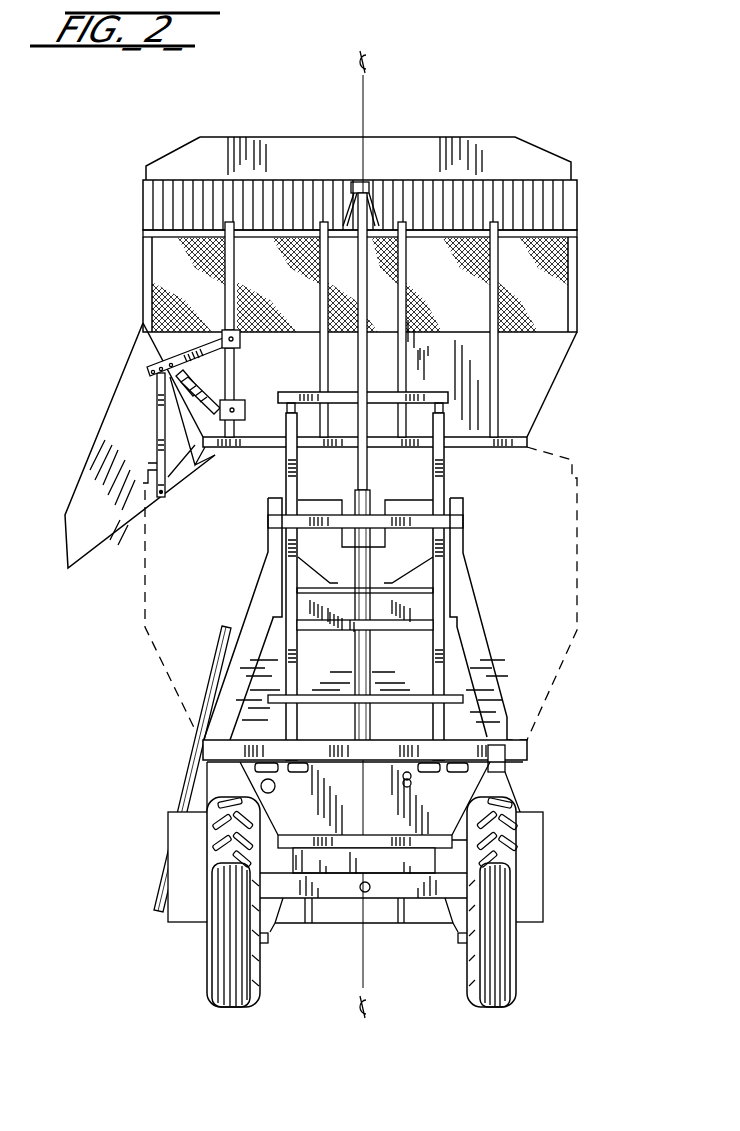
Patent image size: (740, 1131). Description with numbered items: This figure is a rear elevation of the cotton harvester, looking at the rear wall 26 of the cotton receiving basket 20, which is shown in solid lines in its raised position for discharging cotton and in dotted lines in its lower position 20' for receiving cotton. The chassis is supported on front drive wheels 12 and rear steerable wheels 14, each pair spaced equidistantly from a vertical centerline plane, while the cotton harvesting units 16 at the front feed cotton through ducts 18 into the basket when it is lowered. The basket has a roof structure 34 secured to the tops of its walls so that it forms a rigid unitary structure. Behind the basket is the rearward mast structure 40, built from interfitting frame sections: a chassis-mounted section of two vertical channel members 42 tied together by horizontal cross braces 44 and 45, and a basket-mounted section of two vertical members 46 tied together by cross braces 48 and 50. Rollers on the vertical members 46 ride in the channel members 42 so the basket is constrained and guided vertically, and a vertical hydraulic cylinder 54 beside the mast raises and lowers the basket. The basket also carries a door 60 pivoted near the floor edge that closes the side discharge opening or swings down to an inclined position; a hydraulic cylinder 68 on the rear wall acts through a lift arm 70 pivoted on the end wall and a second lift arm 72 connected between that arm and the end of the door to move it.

The front drive wheels 12 is at (216, 855).
The rear steerable wheels 14 is at (222, 962).
The cotton harvesting units 16 is at (183, 908).
The ducts 18 is at (275, 505).
The cotton receiving basket 20 is at (398, 422).
The cotton receiving basket (lowered position) 20' is at (399, 593).
The rear wall 26 is at (530, 370).
The roof structure 34 is at (249, 137).
The rearward mast structure 40 is at (278, 597).
The vertical channel members 42 is at (432, 686).
The horizontal cross brace 44 is at (396, 518).
The horizontal cross brace 45 is at (418, 608).
The vertical members 46 is at (287, 483).
The cross brace 48 is at (390, 623).
The cross brace 50 is at (418, 392).
The vertical hydraulic cylinder 54 is at (372, 548).
The door 60 is at (100, 562).
The hydraulic cylinder 68 is at (213, 396).
The lift arm 70 is at (180, 364).
The lift arm 72 is at (157, 420).